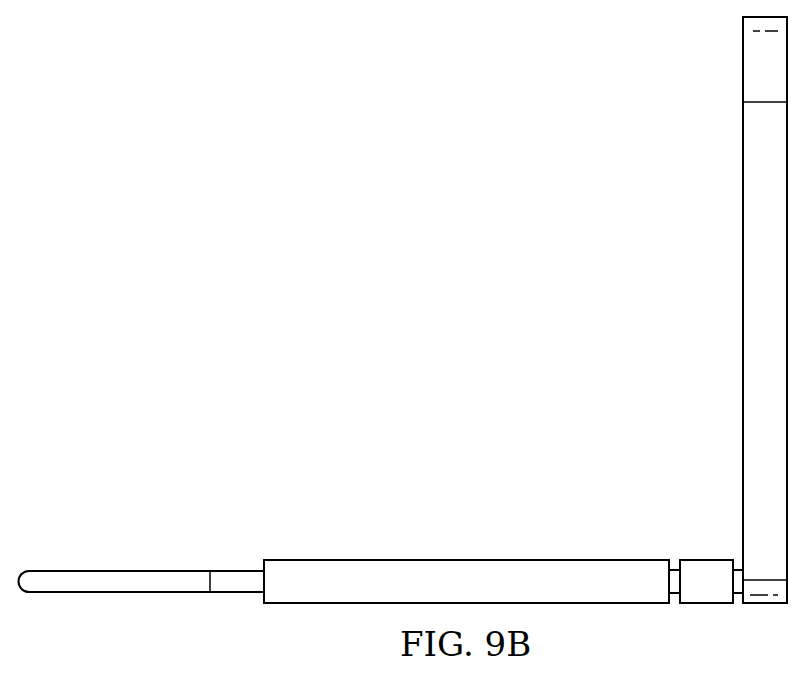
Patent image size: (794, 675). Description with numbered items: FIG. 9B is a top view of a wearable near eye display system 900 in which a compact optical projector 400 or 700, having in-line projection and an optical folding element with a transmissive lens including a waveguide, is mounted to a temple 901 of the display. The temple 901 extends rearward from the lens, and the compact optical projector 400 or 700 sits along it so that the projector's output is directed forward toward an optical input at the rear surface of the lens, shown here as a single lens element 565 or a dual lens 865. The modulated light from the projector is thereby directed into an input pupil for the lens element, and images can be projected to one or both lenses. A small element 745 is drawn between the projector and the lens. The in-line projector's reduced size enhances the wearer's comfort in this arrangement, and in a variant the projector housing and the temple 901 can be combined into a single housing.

The system 900 is at (197, 69).
The temple 901 is at (230, 580).
The compact optical projector 400 is at (468, 559).
The compact optical projector 700 is at (466, 581).
The connector block 745 is at (703, 559).
The single lens element 565 is at (752, 350).
The dual lens 865 is at (765, 310).